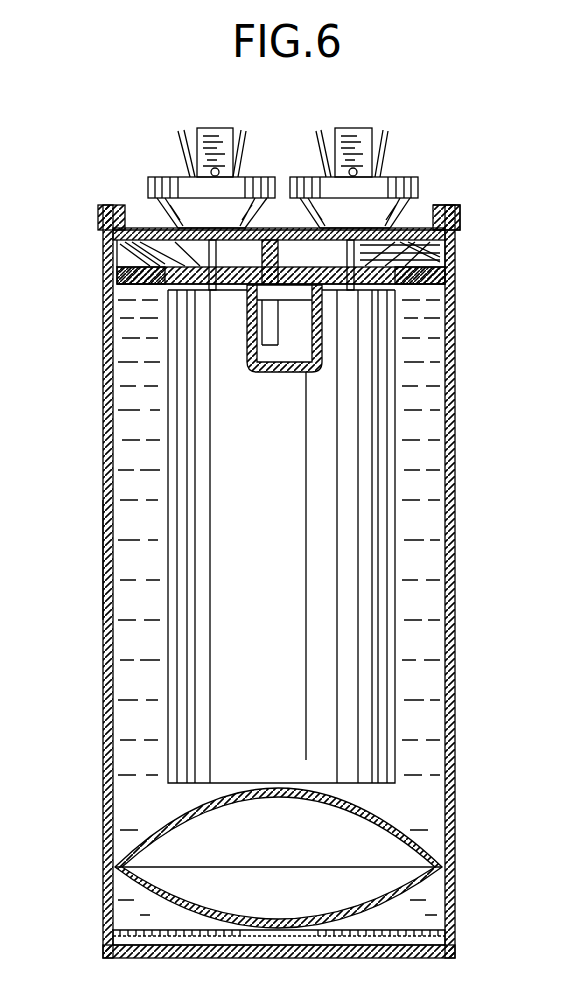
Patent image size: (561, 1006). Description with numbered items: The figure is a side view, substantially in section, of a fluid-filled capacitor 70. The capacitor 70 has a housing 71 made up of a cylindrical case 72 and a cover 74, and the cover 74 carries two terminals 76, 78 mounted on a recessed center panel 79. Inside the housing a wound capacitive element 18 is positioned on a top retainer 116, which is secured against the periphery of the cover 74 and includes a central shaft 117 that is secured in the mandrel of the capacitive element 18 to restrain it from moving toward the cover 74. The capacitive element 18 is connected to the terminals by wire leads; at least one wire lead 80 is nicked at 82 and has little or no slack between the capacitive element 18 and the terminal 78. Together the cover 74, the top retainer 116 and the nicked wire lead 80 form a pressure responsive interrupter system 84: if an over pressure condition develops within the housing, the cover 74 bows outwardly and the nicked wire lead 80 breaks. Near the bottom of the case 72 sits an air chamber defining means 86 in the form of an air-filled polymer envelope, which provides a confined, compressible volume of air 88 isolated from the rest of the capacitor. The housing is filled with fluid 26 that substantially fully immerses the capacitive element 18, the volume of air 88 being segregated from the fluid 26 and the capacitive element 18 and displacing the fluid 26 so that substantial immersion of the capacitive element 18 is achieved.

The capacitor 70 is at (118, 150).
The housing 71 is at (460, 374).
The cylindrical case 72 is at (110, 586).
The cover 74 is at (455, 210).
The terminal 76 is at (215, 128).
The terminal 78 is at (368, 128).
The recessed center panel 79 is at (272, 228).
The wire lead 80 is at (445, 266).
The nick 82 is at (452, 222).
The pressure responsive interrupter system 84 is at (418, 292).
The top retainer 116 is at (125, 264).
The central shaft 117 is at (272, 340).
The capacitive element 18 is at (400, 428).
The fluid 26 is at (130, 410).
The air chamber defining means 86 is at (116, 800).
The volume of air 88 is at (290, 857).